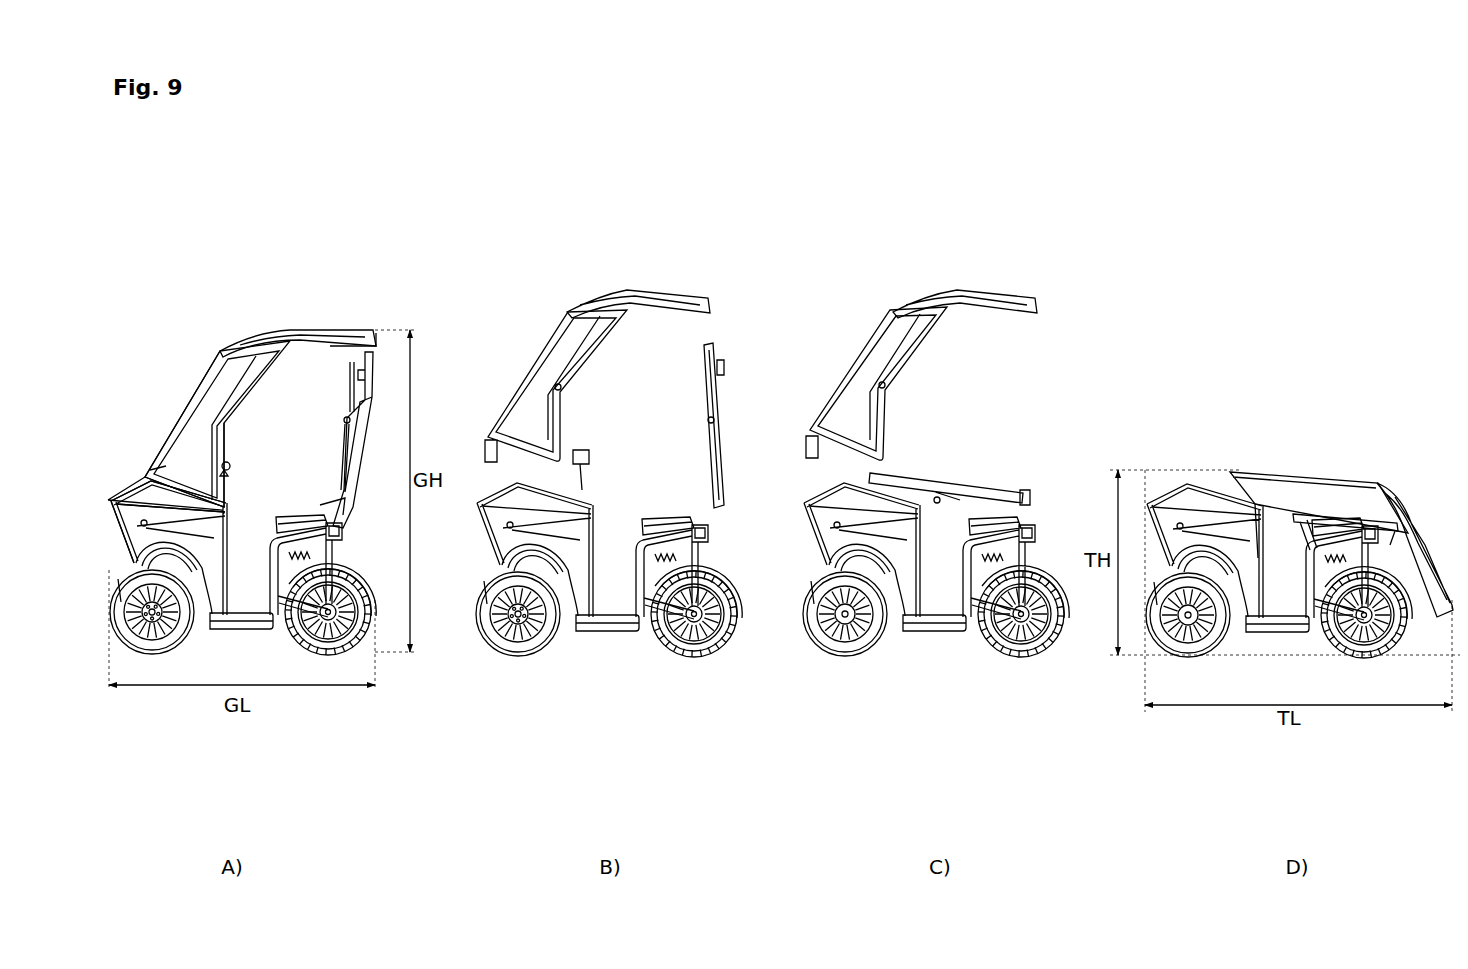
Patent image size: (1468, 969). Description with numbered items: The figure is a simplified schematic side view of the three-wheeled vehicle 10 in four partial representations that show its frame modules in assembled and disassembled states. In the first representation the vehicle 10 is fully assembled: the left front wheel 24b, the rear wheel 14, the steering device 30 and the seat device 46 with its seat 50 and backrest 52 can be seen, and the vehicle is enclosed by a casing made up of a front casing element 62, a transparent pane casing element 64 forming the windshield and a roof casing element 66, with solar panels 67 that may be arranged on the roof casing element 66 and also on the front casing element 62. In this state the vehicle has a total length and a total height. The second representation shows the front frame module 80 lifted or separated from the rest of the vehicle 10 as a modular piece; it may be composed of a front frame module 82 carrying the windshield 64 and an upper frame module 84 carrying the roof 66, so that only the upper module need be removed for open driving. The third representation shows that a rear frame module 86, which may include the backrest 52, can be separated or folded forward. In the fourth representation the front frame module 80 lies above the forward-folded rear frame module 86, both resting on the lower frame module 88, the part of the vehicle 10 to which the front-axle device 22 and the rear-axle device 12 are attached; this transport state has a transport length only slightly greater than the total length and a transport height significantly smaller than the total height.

The vehicle 10 is at (208, 243).
The rear-axle device 12 is at (350, 560).
The rear wheel 14 is at (311, 638).
The front-axle device 22 is at (103, 584).
The left front wheel 24b is at (167, 645).
The steering device 30 is at (228, 460).
The seat device 46 is at (320, 483).
The seat 50 is at (300, 512).
The backrest 52 is at (340, 458).
The front casing element 62 is at (140, 500).
The transparent pane casing element 64 is at (183, 463).
The roof casing element 66 is at (344, 346).
The solar panels 67 is at (302, 336).
The front frame module 80 is at (794, 423).
The front frame module 82 is at (775, 432).
The upper frame module 84 is at (280, 326).
The rear frame module 86 is at (362, 445).
The lower frame module 88 is at (255, 626).